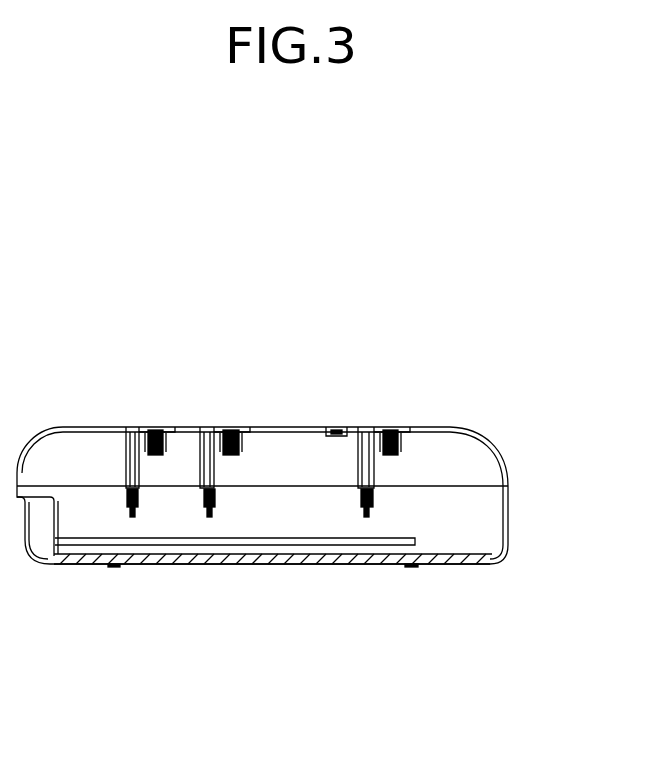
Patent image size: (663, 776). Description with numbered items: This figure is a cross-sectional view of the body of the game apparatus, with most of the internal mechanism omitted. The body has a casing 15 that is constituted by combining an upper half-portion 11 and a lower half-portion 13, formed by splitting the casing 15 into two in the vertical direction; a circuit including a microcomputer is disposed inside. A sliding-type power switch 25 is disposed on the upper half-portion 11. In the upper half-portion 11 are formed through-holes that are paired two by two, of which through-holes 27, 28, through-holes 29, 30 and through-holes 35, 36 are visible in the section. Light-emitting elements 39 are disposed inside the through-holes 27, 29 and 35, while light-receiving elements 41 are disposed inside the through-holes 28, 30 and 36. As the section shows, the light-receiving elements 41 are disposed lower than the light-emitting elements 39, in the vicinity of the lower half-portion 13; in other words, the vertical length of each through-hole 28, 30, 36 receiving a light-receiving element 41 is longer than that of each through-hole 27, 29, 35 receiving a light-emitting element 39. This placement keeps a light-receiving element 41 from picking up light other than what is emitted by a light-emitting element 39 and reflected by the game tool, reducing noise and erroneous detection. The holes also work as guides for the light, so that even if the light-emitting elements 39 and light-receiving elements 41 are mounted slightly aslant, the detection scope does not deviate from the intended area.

The upper half-portion 11 is at (488, 440).
The lower half-portion 13 is at (498, 561).
The casing 15 is at (442, 410).
The sliding-type power switch 25 is at (335, 428).
The through-hole 27 is at (395, 428).
The through-hole 28 is at (365, 428).
The through-hole 29 is at (167, 428).
The through-hole 30 is at (128, 428).
The through-hole 35 is at (237, 428).
The through-hole 36 is at (203, 428).
The light-emitting element 39 is at (163, 452).
The light-receiving element 41 is at (140, 500).